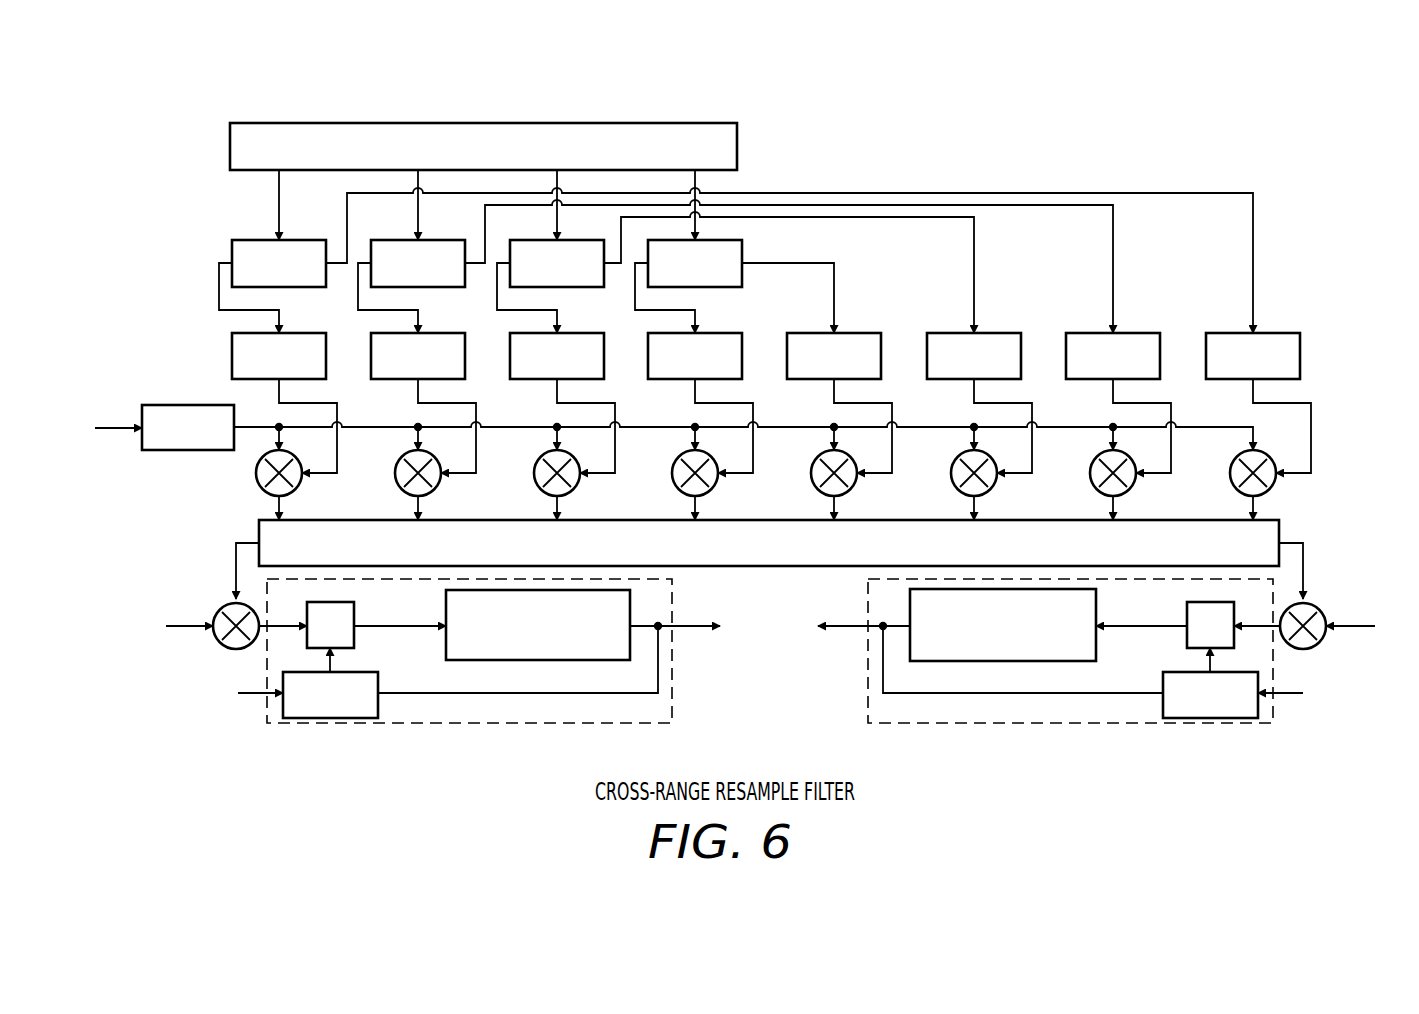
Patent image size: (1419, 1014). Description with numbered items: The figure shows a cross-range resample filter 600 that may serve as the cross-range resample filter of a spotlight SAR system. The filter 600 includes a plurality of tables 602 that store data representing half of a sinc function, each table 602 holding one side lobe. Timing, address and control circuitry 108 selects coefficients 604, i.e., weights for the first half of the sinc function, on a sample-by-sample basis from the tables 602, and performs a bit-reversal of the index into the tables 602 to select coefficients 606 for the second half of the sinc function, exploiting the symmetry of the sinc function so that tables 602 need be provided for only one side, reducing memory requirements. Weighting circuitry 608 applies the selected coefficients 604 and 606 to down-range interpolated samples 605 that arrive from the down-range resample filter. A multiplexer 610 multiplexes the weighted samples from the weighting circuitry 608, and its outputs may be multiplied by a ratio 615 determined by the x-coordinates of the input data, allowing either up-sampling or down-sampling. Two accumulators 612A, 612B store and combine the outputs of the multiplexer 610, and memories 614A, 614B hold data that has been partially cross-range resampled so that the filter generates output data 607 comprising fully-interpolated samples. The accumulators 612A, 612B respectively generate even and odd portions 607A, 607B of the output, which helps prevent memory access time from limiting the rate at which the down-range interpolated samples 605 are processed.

The cross-range resample filter 600 is at (133, 97).
The timing, address and control circuitry 108 is at (712, 122).
The tables 602 is at (249, 237).
The coefficients 604 is at (295, 333).
The coefficients 606 is at (859, 333).
The down-range interpolated samples 605 is at (112, 432).
The weighting circuitry 608 is at (296, 489).
The multiplexer 610 is at (1283, 524).
The ratio 615 is at (143, 645).
The accumulator 612A is at (287, 725).
The accumulator 612B is at (896, 724).
The memory 614A is at (462, 661).
The memory 614B is at (962, 661).
The output data 607 is at (770, 672).
The even portion 607A is at (696, 625).
The odd portion 607B is at (836, 627).